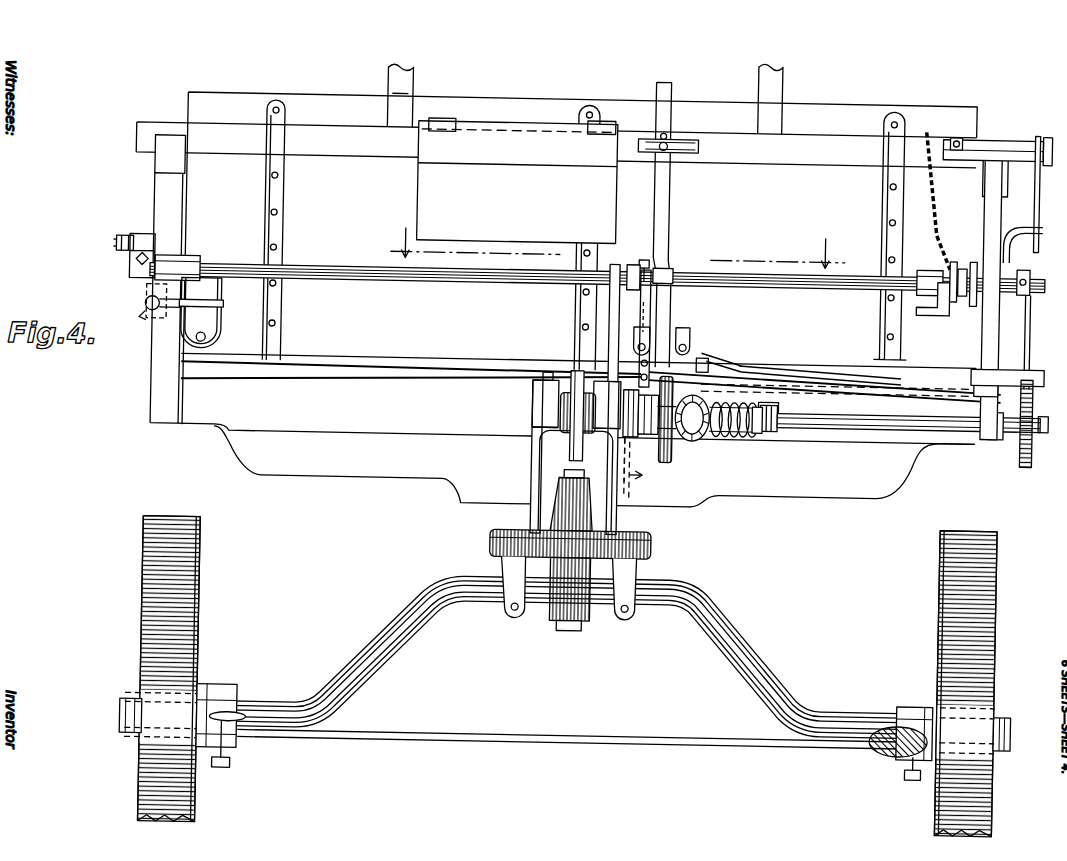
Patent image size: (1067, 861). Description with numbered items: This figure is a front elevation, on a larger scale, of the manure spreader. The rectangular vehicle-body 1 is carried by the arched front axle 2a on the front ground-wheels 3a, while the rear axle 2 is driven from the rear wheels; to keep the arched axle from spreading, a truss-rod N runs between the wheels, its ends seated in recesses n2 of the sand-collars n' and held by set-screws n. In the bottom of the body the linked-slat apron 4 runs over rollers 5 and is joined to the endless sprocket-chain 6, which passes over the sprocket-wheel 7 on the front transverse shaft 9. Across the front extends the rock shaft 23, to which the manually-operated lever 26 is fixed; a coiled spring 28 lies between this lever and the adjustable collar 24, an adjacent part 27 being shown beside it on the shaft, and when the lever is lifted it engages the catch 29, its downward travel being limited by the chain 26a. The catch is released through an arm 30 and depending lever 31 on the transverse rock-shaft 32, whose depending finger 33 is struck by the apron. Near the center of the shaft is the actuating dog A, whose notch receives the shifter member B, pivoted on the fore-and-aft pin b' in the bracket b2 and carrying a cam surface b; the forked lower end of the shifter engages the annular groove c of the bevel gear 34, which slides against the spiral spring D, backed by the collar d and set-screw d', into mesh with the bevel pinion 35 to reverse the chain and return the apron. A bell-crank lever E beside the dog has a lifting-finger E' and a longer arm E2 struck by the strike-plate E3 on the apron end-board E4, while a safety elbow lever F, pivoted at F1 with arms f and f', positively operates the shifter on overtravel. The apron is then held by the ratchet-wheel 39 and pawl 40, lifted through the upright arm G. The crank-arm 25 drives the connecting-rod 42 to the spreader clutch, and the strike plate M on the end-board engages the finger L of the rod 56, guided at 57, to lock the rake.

The vehicle-body 1 is at (554, 245).
The apron 4 is at (335, 361).
The end-board of the apron E4 is at (324, 382).
The transverse rock-shaft 32 is at (797, 386).
The sprocket-chain 6 is at (573, 212).
The rollers 5 is at (975, 368).
The rock shaft 23 is at (433, 283).
The collar 24 is at (166, 264).
The crank-arm 25 is at (130, 265).
The connecting-rod 42 is at (123, 240).
The strike plate M is at (210, 299).
The finger L is at (221, 308).
The rod 56 is at (143, 309).
The guide 57 is at (140, 319).
The shifter member B is at (669, 238).
The pin b' is at (682, 124).
The bracket b2 is at (680, 152).
The cam surface b is at (639, 253).
The bell-crank lever E is at (677, 265).
The actuating dog A is at (634, 280).
The lifting-finger E' is at (639, 328).
The longer arm of bell-crank lever E2 is at (682, 318).
The strike-plate E3 is at (689, 342).
The elbow lever F is at (716, 355).
The pivot of elbow lever F1 is at (722, 352).
The arm of lever F f is at (706, 350).
The arm of lever F f' is at (764, 370).
The set-screw d' is at (773, 378).
The sprocket-wheel 7 is at (567, 442).
The annular groove c is at (641, 437).
The bevel pinion 35 is at (676, 452).
The bevel gear 34 is at (663, 461).
The spiral spring D is at (735, 435).
The collar d is at (769, 437).
The front transverse shaft 9 is at (866, 424).
The depending finger 33 is at (637, 484).
The front axle 2a is at (784, 661).
The truss-rod N is at (580, 737).
The front ground-wheels 3a is at (180, 521).
The sand-collars n' is at (565, 725).
The recesses n2 is at (880, 742).
The set-screws n is at (566, 766).
The manually-operated lever 26 is at (933, 308).
The chain 26a is at (930, 204).
The coiled spring 28 is at (951, 254).
The clutch disc 27 is at (972, 254).
The catch 29 is at (945, 131).
The arm 30 is at (1036, 186).
The depending lever 31 is at (1010, 248).
The rear axle 2 is at (1030, 272).
The upright arm G is at (1029, 322).
The pawl 40 is at (1030, 362).
The ratchet-wheel 39 is at (1028, 459).